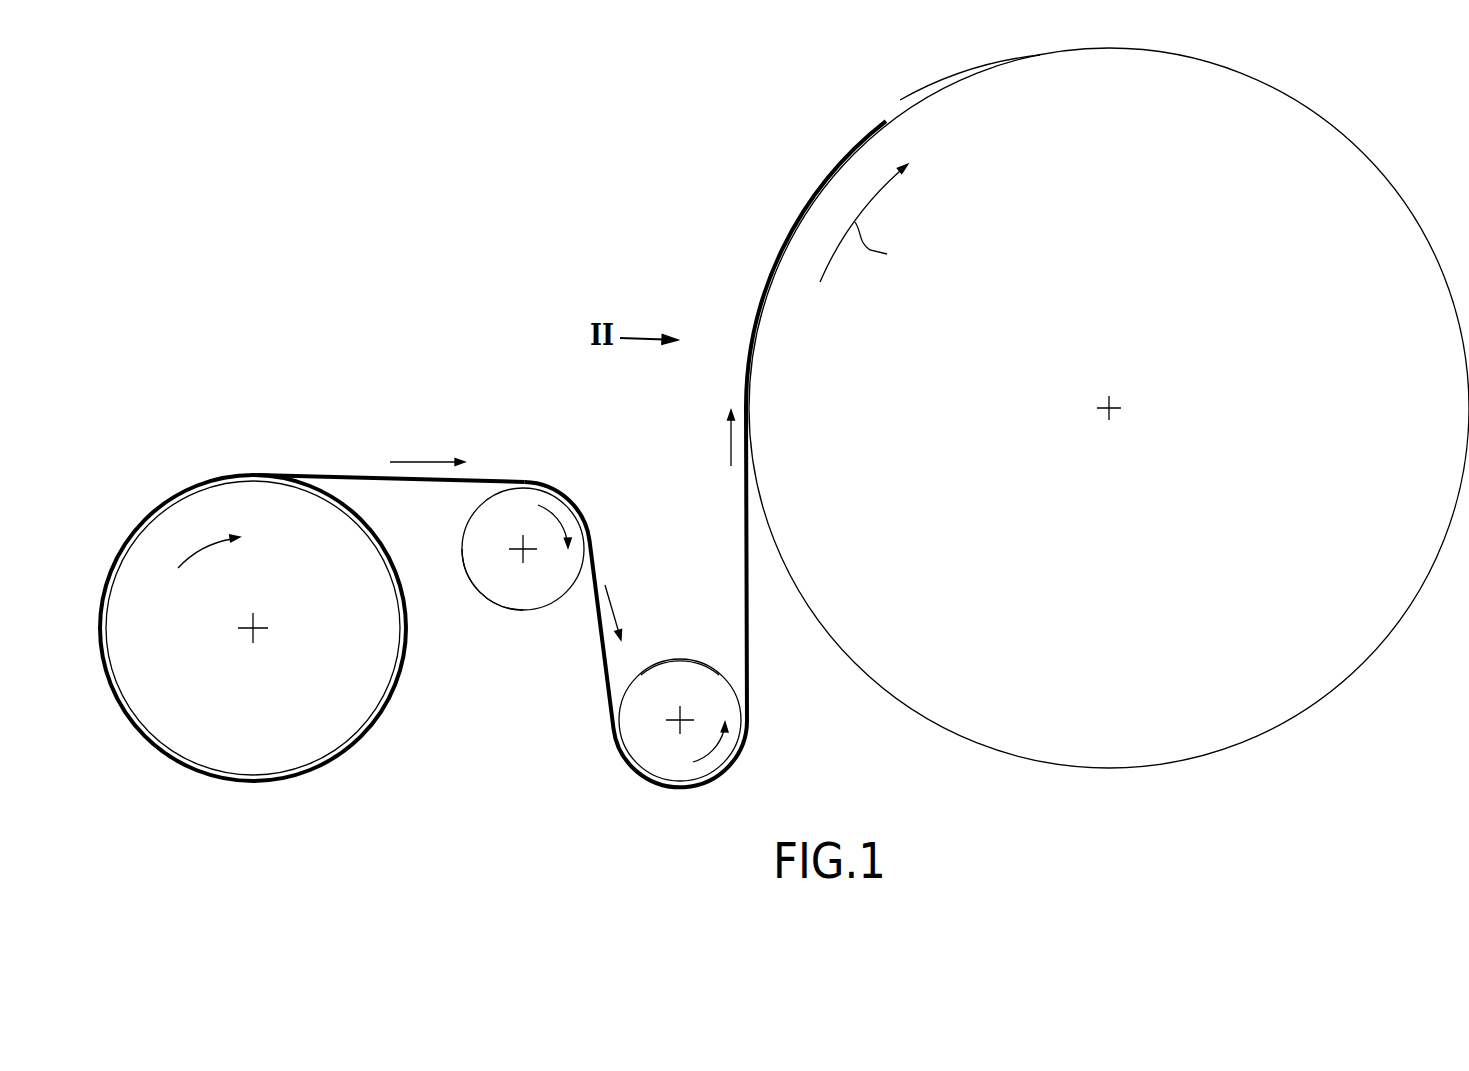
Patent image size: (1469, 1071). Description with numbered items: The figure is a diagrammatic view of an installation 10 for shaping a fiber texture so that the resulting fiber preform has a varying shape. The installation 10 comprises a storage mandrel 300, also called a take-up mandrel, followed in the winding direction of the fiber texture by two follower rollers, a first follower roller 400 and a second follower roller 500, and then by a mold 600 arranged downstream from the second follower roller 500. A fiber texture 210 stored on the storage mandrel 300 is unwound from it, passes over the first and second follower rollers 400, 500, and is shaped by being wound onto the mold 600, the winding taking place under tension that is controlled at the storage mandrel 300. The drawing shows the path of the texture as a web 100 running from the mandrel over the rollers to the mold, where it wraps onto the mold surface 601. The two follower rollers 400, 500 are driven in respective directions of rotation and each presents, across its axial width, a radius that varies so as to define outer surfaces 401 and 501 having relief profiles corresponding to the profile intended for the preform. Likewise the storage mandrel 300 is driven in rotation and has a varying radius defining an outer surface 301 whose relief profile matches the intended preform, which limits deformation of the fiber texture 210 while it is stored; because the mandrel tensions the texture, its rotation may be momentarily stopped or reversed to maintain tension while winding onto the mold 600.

The installation 10 is at (243, 147).
The material web 100 is at (740, 495).
The fiber texture 210 is at (316, 479).
The storage mandrel 300 is at (330, 778).
The outer surface 301 is at (372, 716).
The first follower roller 400 is at (517, 612).
The outer surface 401 is at (487, 598).
The second follower roller 500 is at (663, 648).
The outer surface 501 is at (699, 662).
The mold 600 is at (1343, 110).
The surface of second drum 601 is at (962, 80).